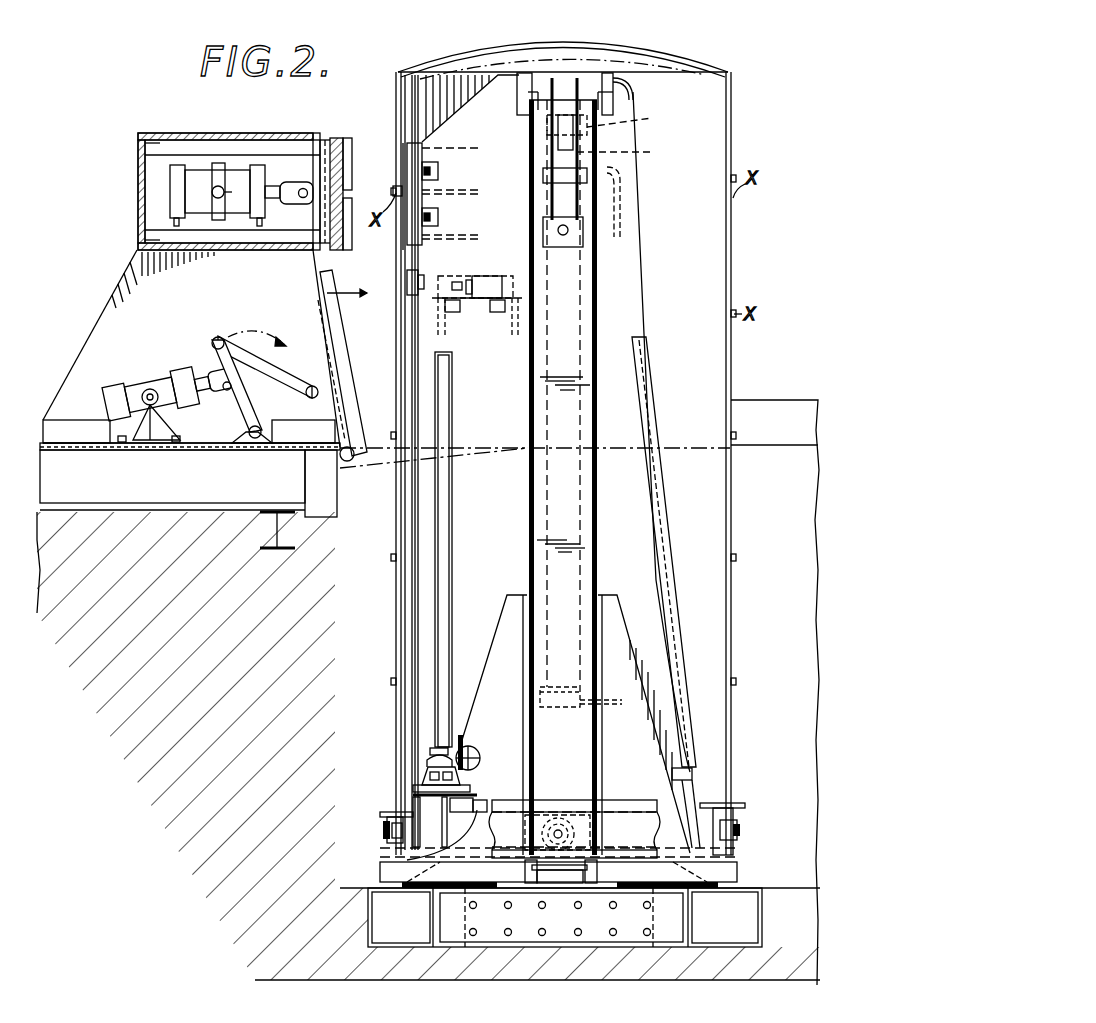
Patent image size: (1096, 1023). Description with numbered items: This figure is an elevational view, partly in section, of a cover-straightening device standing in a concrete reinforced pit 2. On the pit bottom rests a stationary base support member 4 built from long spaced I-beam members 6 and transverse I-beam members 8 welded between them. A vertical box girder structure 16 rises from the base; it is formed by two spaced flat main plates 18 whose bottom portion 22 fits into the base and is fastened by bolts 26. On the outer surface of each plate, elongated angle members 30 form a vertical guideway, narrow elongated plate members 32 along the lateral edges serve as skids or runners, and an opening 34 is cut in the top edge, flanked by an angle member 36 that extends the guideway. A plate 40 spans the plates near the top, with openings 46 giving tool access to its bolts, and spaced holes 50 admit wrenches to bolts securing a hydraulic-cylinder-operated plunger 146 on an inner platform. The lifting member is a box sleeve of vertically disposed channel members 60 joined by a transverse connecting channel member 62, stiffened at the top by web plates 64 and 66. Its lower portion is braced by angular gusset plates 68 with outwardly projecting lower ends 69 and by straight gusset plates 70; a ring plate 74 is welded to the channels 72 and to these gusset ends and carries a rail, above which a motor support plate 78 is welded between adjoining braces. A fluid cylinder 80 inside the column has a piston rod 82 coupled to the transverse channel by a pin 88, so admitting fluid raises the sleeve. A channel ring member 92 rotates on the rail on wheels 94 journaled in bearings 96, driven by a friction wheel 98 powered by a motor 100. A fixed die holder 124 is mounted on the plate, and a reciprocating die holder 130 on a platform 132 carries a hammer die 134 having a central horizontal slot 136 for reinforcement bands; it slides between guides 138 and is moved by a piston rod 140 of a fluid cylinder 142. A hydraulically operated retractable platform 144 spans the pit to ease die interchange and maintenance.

The concrete reinforced pit 2 is at (778, 596).
The stationary base support member 4 is at (763, 918).
The I-beam members 6 is at (752, 926).
The transverse I-beam members 8 is at (432, 921).
The box girder structure 16 is at (652, 268).
The flat main plates 18 is at (649, 315).
The bottom portion 22 is at (465, 922).
The bolts 26 is at (611, 928).
The elongated angle members 30 is at (528, 491).
The narrow elongated plate members 32 is at (660, 491).
The opening 34 is at (598, 72).
The angle member 36 is at (524, 73).
The plate 40 is at (422, 142).
The openings 46 is at (438, 176).
The spaced holes 50 is at (497, 306).
The vertically disposed channel members 60 is at (588, 401).
The transverse connecting channel member 62 is at (566, 110).
The web plate 64 is at (537, 97).
The web plate 66 is at (613, 97).
The angular gusset plates 68 is at (512, 626).
The outwardly projecting lower ends 69 is at (390, 870).
The straight gusset plates 70 is at (528, 664).
The channels 72 is at (545, 866).
The ring plate 74 is at (742, 860).
The motor support plate 78 is at (476, 813).
The fluid cylinder 80 is at (578, 428).
The piston rod 82 is at (626, 190).
The pin 88 is at (628, 119).
The channel ring member 92 is at (735, 808).
The wheels 94 is at (388, 822).
The bearings 96 is at (385, 831).
The friction wheel 98 is at (417, 790).
The motor 100 is at (470, 752).
The fixed die holder 124 is at (403, 146).
The reciprocating die holder 130 is at (273, 148).
The platform 132 is at (227, 320).
The hammer die 134 is at (337, 138).
The central horizontal slot 136 is at (393, 191).
The guides 138 is at (182, 126).
The piston rod 140 is at (316, 230).
The fluid cylinder 142 is at (204, 178).
The retractable platform 144 is at (332, 373).
The hydraulic-cylinder-operated plunger 146 is at (407, 278).